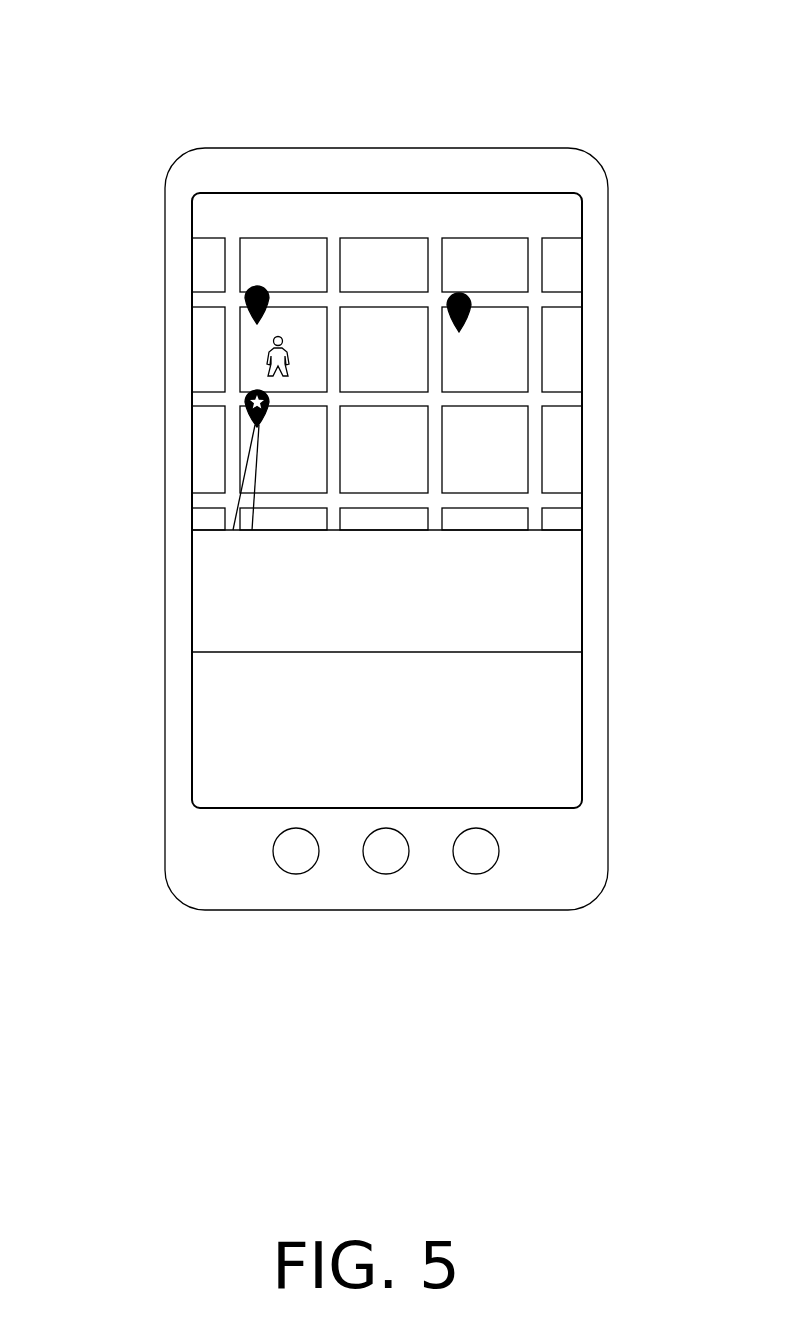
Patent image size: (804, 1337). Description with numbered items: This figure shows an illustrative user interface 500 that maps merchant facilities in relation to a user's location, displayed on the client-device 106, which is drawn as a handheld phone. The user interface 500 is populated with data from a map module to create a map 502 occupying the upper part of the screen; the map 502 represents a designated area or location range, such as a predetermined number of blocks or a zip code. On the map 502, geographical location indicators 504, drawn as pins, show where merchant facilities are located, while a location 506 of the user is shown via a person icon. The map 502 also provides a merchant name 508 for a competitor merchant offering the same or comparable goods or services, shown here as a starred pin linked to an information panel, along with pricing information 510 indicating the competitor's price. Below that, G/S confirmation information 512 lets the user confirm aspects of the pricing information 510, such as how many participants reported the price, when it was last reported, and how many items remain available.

The user interface 500 is at (137, 40).
The client-device 106 is at (593, 160).
The map 502 is at (208, 223).
The geographical location indicators 504 is at (443, 303).
The location of the user 506 is at (262, 336).
The merchant name 508 is at (208, 530).
The pricing information 510 is at (225, 587).
The G/S confirmation information 512 is at (220, 670).